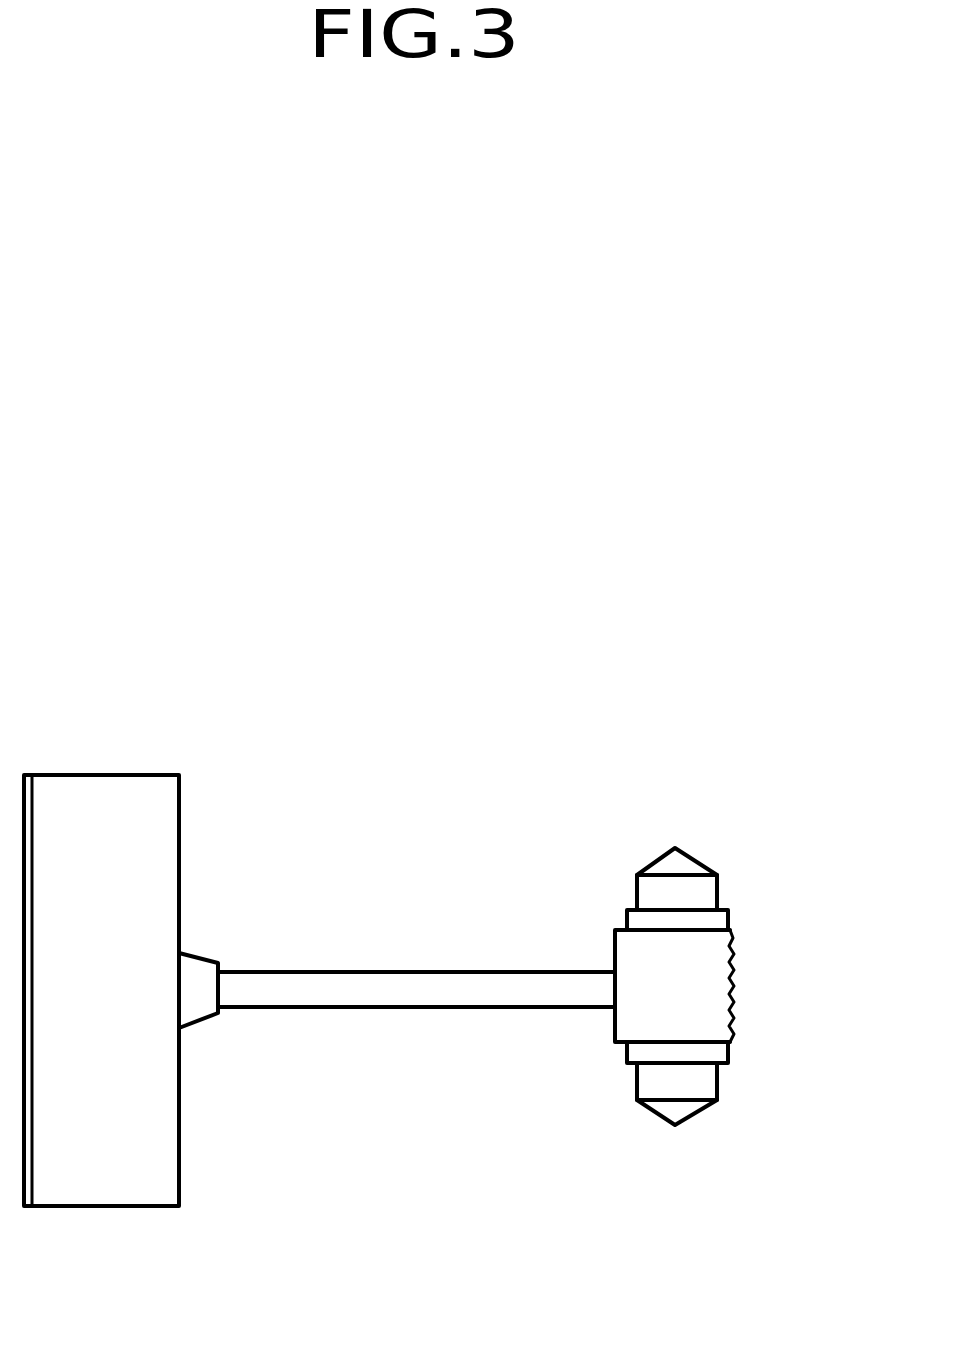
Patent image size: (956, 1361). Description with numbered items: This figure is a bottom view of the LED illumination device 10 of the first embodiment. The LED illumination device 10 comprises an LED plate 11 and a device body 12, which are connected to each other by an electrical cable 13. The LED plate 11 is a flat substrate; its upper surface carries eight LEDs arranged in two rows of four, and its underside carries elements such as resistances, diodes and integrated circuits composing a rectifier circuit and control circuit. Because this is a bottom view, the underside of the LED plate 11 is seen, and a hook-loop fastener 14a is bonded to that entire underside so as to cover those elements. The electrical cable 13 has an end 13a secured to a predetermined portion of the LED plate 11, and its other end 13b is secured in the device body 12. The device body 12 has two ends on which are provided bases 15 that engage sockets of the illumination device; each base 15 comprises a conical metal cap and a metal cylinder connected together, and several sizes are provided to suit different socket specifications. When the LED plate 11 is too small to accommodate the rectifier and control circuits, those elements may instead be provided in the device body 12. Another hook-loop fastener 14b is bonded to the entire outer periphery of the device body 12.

The LED illumination device 10 is at (395, 857).
The LED plate 11 is at (115, 775).
The device body 12 is at (707, 1053).
The electrical cable 13 is at (418, 995).
The end of electrical cable 13a is at (222, 995).
The other end of electrical cable 13b is at (612, 992).
The hook-loop fastener 14a is at (121, 1185).
The hook-loop fastener 14b is at (703, 967).
The base 15 is at (703, 889).